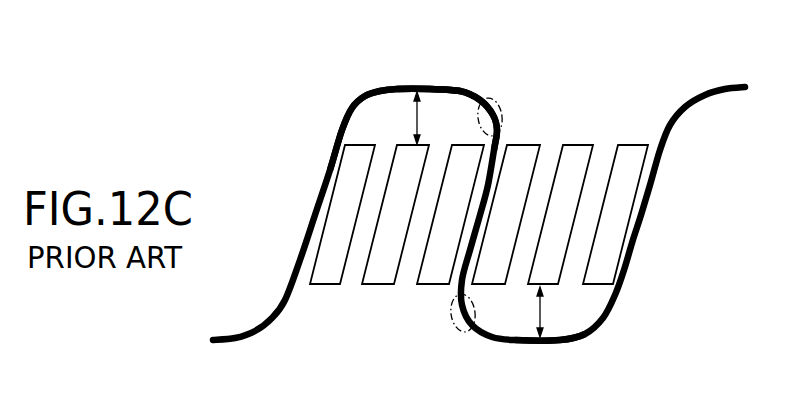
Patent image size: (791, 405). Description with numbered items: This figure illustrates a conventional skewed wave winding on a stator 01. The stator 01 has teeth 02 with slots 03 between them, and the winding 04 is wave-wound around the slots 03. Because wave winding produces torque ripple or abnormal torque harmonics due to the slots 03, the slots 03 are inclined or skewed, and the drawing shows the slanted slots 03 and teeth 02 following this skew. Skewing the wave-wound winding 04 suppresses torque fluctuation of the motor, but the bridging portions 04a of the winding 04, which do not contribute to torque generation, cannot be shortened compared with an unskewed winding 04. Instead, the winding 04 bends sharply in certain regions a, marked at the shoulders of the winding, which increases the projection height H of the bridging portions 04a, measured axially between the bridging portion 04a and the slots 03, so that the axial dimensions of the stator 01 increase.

The stator 01 is at (652, 272).
The teeth 02 is at (348, 163).
The slots 03 is at (600, 160).
The winding 04 is at (352, 108).
The bridging portions 04a is at (430, 87).
The regions a is at (499, 108).
The projection height H is at (487, 214).